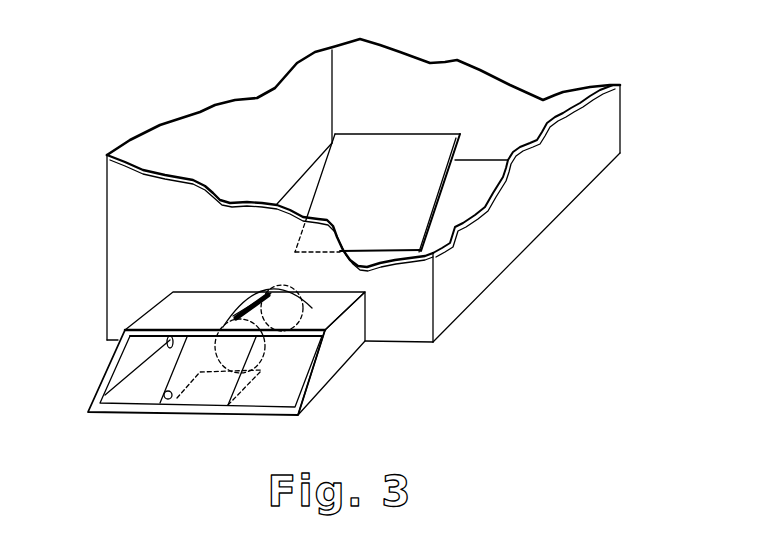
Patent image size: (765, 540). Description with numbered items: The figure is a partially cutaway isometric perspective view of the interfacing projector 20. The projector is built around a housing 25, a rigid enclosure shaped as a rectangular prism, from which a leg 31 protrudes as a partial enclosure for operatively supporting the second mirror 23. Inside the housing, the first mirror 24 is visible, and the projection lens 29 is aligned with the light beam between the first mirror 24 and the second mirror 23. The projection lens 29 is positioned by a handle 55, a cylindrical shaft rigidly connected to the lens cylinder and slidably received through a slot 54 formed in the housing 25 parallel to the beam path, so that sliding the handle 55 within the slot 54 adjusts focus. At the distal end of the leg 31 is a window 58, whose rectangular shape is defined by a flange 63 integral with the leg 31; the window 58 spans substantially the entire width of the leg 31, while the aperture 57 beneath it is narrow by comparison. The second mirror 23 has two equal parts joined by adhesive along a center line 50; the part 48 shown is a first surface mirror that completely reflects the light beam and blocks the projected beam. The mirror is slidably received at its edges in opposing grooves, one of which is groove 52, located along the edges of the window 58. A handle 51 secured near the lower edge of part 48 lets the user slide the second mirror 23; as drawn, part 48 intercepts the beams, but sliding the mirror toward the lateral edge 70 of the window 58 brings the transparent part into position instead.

The interfacing projector 20 is at (486, 51).
The second mirror 23 is at (224, 355).
The first mirror 24 is at (362, 234).
The housing 25 is at (131, 229).
The projection lens 29 is at (223, 328).
The leg 31 is at (345, 342).
The part 48 is at (187, 372).
The center line 50 is at (227, 364).
The handle 51 is at (164, 395).
The groove 52 is at (145, 348).
The slot 54 is at (302, 301).
The handle 55 is at (247, 296).
The aperture 57 is at (177, 408).
The window 58 is at (127, 413).
The flange 63 is at (143, 327).
The lateral edge 70 is at (116, 362).